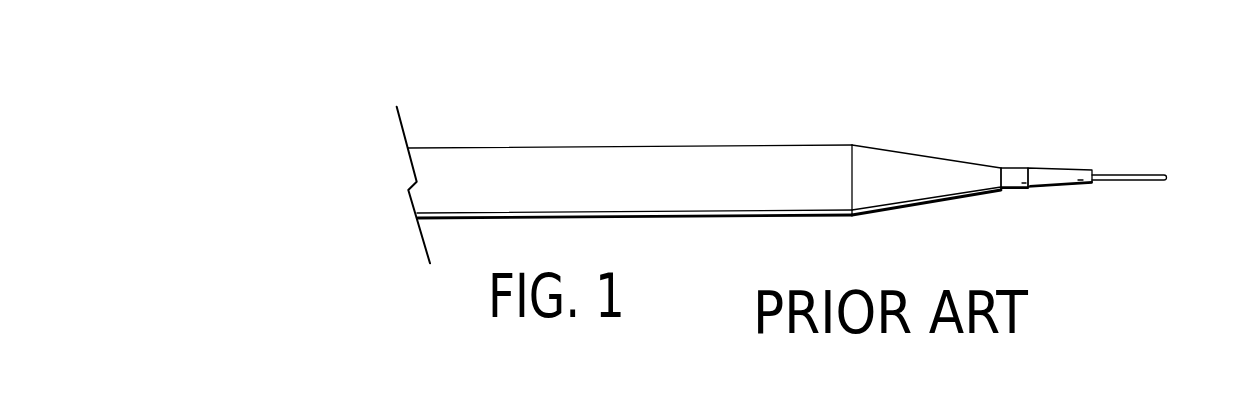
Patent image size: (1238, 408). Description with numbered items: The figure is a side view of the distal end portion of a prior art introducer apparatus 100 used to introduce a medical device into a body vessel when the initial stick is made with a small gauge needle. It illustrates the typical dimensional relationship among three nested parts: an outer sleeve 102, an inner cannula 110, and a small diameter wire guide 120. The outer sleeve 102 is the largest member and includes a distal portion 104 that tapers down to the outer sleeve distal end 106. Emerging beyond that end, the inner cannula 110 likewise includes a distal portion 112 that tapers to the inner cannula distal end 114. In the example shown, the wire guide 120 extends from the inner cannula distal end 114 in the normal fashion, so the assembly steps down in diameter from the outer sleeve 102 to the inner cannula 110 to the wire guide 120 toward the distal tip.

The introducer apparatus 100 is at (755, 123).
The outer sleeve 102 is at (550, 147).
The distal portion 104 is at (925, 156).
The outer sleeve distal end 106 is at (1001, 191).
The inner cannula 110 is at (1018, 168).
The distal portion 112 is at (1062, 188).
The inner cannula distal end 114 is at (1093, 168).
The wire guide 120 is at (1130, 173).